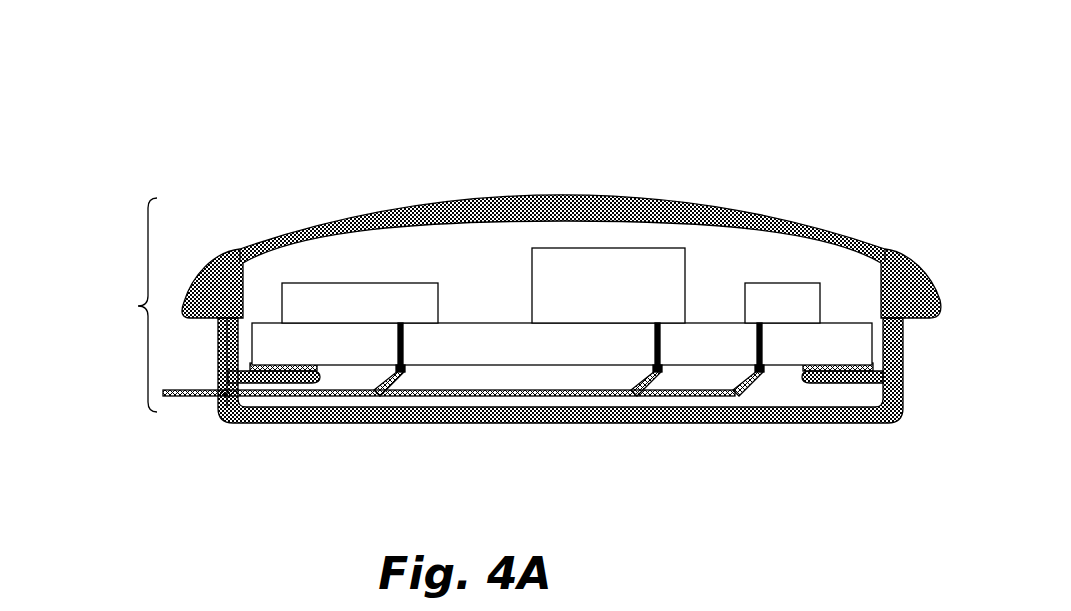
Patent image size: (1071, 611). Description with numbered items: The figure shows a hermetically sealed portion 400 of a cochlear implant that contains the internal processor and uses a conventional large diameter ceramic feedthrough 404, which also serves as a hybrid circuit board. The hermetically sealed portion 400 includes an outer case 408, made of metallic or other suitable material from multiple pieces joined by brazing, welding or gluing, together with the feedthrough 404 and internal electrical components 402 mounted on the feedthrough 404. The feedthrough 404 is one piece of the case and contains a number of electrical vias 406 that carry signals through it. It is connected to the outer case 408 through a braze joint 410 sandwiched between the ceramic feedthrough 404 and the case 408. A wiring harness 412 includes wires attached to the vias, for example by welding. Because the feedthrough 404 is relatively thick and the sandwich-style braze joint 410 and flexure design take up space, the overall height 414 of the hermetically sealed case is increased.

The hermetically sealed portion 400 is at (233, 92).
The internal electrical components 402 is at (342, 315).
The feedthrough 404 is at (505, 355).
The electrical vias 406 is at (400, 373).
The outer case 408 is at (221, 256).
The braze joint 410 is at (284, 372).
The wiring harness 412 is at (193, 397).
The height 414 is at (99, 305).